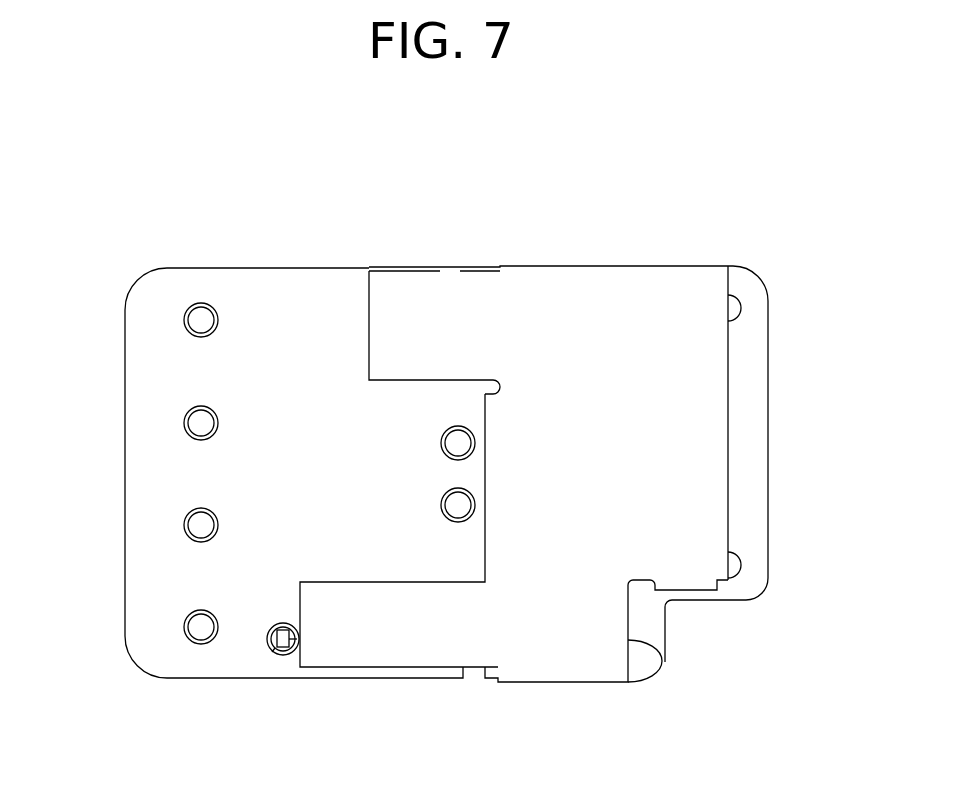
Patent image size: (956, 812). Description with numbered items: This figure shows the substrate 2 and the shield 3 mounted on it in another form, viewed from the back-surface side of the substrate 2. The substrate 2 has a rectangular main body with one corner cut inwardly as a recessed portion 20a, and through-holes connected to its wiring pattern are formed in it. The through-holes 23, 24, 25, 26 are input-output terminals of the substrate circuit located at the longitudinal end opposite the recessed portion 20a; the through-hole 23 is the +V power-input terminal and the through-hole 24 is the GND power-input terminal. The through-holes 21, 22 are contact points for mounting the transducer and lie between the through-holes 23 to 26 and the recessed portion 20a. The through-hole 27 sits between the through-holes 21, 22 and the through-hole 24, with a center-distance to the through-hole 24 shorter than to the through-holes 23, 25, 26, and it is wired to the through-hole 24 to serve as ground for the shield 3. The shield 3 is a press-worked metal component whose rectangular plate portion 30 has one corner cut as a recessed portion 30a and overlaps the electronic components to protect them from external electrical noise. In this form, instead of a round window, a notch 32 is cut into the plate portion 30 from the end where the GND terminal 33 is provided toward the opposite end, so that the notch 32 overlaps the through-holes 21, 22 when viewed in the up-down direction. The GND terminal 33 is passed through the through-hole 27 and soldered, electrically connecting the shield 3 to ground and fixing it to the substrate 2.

The substrate 2 is at (123, 485).
The shield 3 is at (731, 396).
The recessed portion 20a is at (667, 618).
The through-hole 21 is at (450, 441).
The through-hole 22 is at (450, 503).
The through-hole 23 is at (193, 321).
The through-hole 24 is at (193, 629).
The through-hole 25 is at (193, 423).
The through-hole 26 is at (193, 525).
The through-hole 27 is at (270, 652).
The plate portion 30 is at (663, 306).
The recessed portion 30a is at (660, 662).
The notch 32 is at (412, 381).
The GND terminal 33 is at (294, 646).